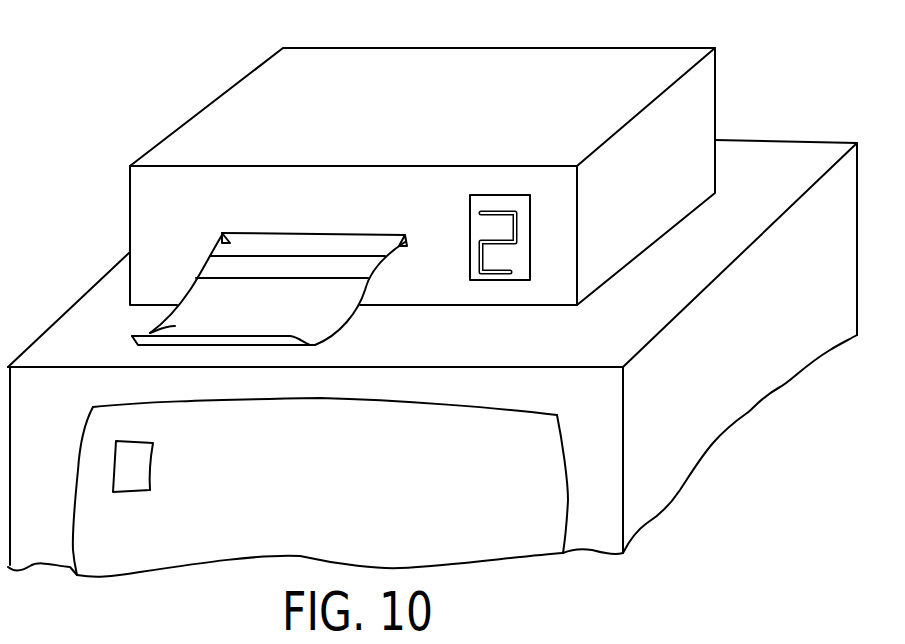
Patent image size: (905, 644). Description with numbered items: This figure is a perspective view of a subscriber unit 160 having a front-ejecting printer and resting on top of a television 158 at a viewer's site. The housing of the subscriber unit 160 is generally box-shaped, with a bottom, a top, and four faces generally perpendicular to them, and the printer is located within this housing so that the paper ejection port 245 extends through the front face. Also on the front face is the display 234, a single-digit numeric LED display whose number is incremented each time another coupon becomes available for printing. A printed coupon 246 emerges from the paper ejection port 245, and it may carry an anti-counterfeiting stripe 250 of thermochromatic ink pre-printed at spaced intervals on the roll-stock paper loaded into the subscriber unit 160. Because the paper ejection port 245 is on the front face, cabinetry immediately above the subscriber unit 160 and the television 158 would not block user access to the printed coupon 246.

The television 158 is at (750, 138).
The subscriber unit 160 is at (227, 88).
The display 234 is at (530, 228).
The paper ejection port 245 is at (400, 237).
The anti-counterfeiting stripe 250 is at (210, 267).
The printed coupon 246 is at (170, 325).